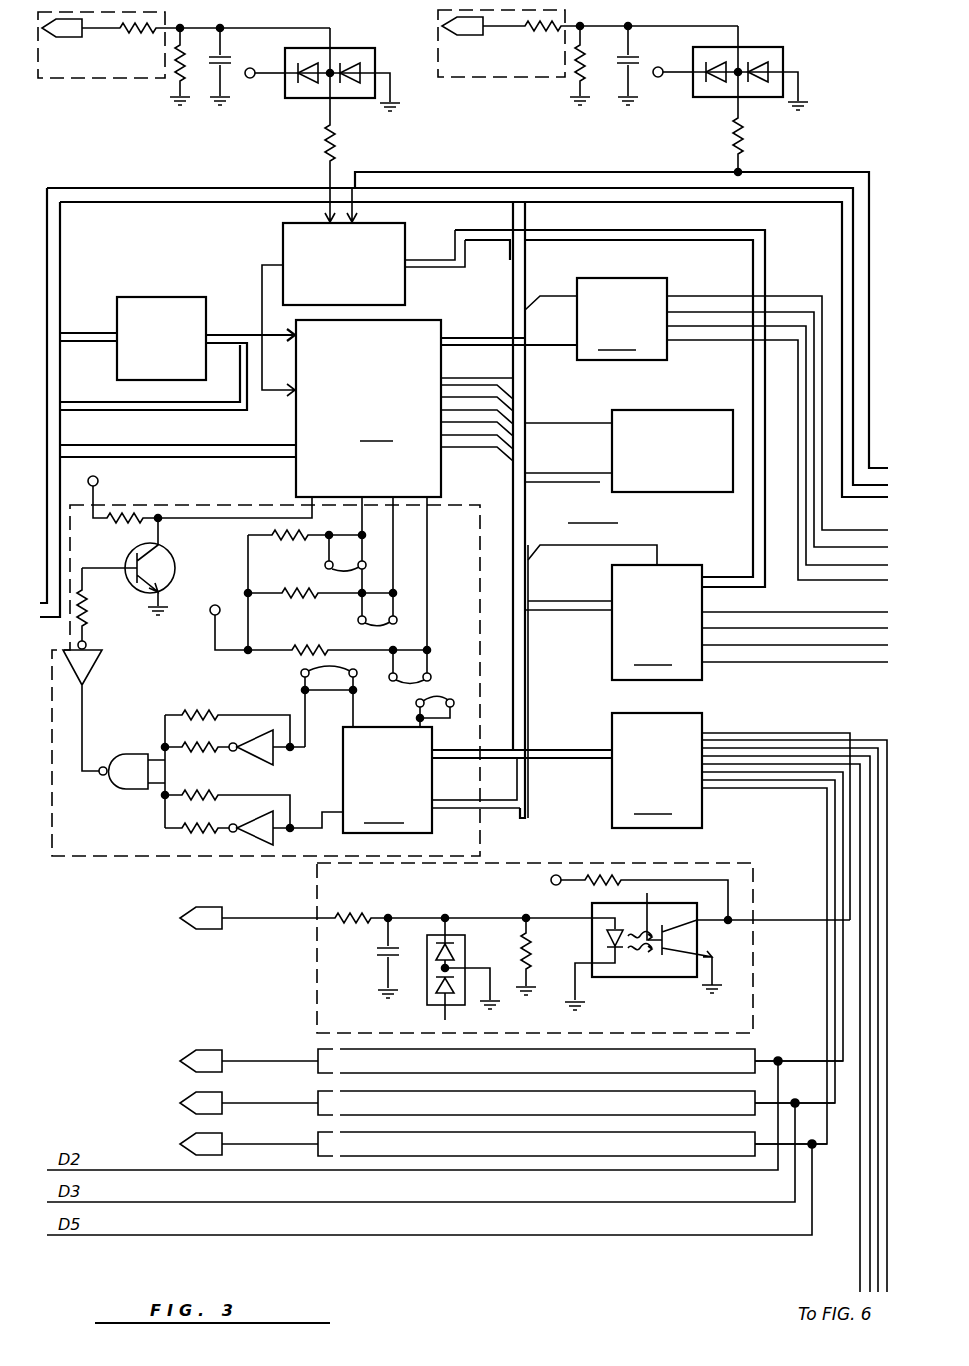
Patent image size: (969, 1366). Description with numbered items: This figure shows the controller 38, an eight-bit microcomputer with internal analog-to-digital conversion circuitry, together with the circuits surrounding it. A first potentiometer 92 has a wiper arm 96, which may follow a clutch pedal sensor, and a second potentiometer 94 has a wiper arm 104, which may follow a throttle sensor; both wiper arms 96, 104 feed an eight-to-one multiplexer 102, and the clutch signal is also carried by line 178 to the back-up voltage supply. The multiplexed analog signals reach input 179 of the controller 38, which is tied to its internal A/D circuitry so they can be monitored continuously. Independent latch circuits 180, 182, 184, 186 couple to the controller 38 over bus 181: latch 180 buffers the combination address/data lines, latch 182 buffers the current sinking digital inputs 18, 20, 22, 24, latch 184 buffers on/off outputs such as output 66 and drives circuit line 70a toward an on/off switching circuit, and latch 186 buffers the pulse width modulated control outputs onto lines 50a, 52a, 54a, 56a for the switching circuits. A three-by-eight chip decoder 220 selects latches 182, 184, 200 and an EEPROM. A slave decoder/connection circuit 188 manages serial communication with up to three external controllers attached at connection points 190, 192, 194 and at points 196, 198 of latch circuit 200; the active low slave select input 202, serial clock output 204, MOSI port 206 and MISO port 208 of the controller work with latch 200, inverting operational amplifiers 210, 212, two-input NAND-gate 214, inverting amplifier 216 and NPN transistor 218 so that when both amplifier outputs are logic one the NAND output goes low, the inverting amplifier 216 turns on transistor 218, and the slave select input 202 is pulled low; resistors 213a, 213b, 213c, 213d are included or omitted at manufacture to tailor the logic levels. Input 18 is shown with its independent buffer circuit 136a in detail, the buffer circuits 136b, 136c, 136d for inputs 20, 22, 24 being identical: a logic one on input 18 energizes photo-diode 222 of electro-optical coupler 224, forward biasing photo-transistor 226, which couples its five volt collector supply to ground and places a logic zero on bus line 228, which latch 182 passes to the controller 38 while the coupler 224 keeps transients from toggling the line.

The current sinking digital input 18 is at (226, 920).
The current sinking digital input 20 is at (231, 1060).
The current sinking digital input 22 is at (220, 1100).
The current sinking digital input 24 is at (218, 1144).
The controller 38 is at (318, 408).
The latch output line 50a is at (708, 289).
The line 52a is at (678, 305).
The latch output line 54a is at (688, 329).
The latch output line 56a is at (735, 345).
The controller output 66 is at (477, 429).
The circuit line 70a is at (832, 646).
The first potentiometer 92 is at (462, 78).
The second potentiometer 94 is at (92, 78).
The wiper arm 96 is at (487, 30).
The multiplexer 102 is at (283, 243).
The wiper arm 104 is at (86, 31).
The independent buffer circuit 136a is at (536, 926).
The output driver circuit 136b is at (312, 1061).
The output driver circuit 136c is at (316, 1103).
The output driver circuit 136d is at (314, 1144).
The line 178 is at (768, 172).
The controller input 179 is at (291, 393).
The latch circuit 180 is at (165, 296).
The bus 181 is at (47, 232).
The latch 182 is at (659, 997).
The latch circuit 184 is at (706, 681).
The latch 186 is at (706, 413).
The slave decoder/connection circuit 188 is at (286, 691).
The connection point 190 is at (324, 564).
The connection point 192 is at (334, 619).
The connection point 194 is at (433, 674).
The connection point 196 is at (300, 671).
The connection point 198 is at (454, 698).
The latch circuit 200 is at (431, 786).
The active low slave select input 202 is at (312, 497).
The serial clock output 204 is at (363, 497).
The Master out Slave input (MOSI) digital port 206 is at (395, 497).
The Master input Slave output (MISO) digital port 208 is at (433, 500).
The inverting operational amplifier 210 is at (264, 751).
The inverting operational amplifier 212 is at (257, 842).
The resistor 213a is at (190, 709).
The resistor 213b is at (196, 746).
The resistor 213c is at (214, 782).
The resistor 213d is at (184, 838).
The two input NAND-gate 214 is at (123, 763).
The inverting amplifier 216 is at (96, 670).
The NPN transistor 218 is at (172, 567).
The chip decoder circuit 220 is at (680, 492).
The photo-diode 222 is at (607, 938).
The electro-optical coupler 224 is at (635, 977).
The photo-transistor 226 is at (699, 940).
The bus line 228 is at (807, 730).